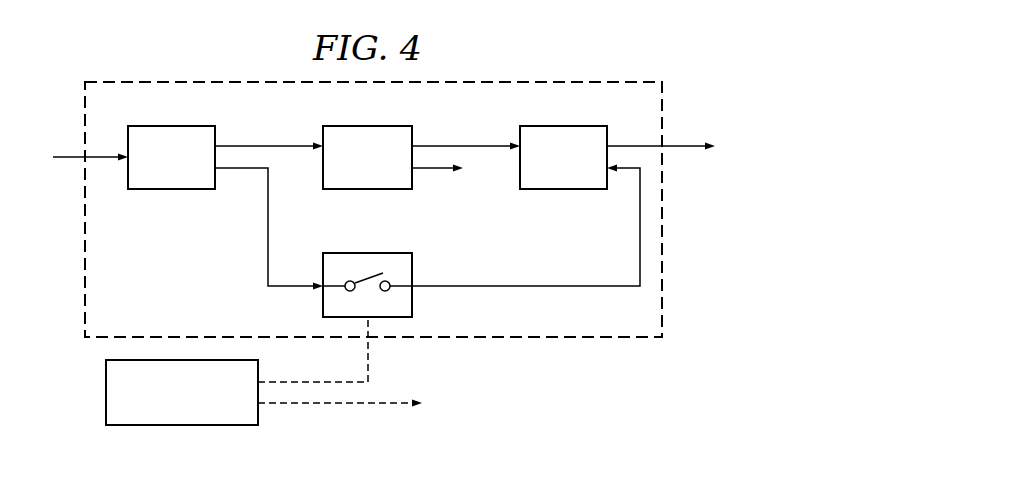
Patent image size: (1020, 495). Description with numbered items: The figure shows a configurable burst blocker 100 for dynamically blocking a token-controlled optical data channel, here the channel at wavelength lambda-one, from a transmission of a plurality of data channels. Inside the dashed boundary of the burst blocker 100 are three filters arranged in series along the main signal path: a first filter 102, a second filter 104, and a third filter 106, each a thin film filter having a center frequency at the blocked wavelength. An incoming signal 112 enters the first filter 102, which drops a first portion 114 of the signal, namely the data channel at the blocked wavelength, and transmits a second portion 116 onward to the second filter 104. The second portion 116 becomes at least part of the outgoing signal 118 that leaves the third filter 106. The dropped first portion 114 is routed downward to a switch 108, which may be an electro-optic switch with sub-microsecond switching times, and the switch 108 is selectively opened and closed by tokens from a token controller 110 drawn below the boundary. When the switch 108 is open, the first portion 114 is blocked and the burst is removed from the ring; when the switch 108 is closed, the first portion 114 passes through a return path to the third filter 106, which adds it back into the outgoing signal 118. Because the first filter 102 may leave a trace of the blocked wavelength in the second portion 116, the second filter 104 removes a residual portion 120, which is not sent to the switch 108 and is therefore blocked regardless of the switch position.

The configurable burst blocker 100 is at (540, 77).
The first filter 102 is at (165, 192).
The second filter 104 is at (380, 192).
The third filter 106 is at (572, 192).
The switch 108 is at (353, 250).
The token controller 110 is at (106, 395).
The incoming signal 112 is at (61, 155).
The first portion 114 is at (268, 255).
The second portion 116 is at (267, 145).
The outgoing signal 118 is at (687, 145).
The residual portion 120 is at (435, 170).